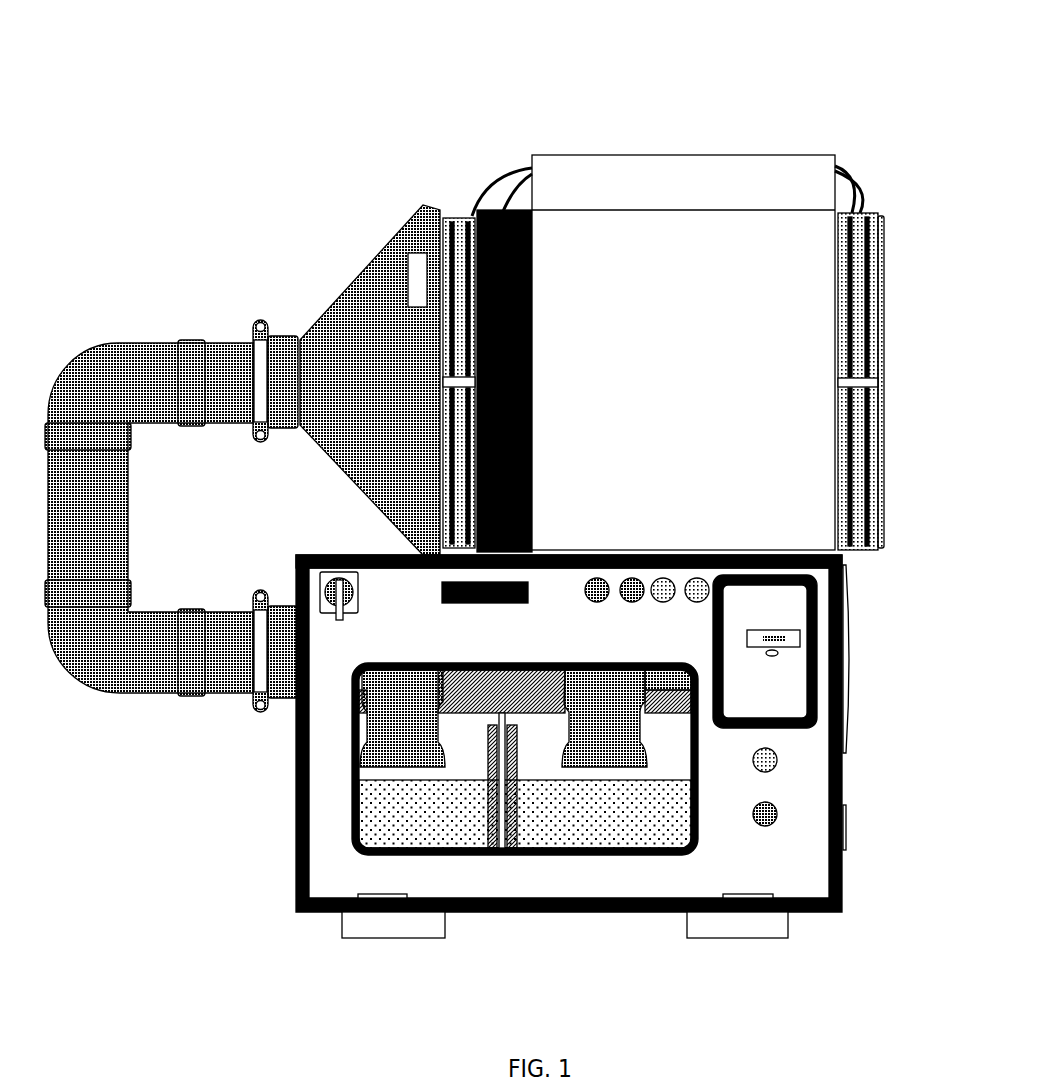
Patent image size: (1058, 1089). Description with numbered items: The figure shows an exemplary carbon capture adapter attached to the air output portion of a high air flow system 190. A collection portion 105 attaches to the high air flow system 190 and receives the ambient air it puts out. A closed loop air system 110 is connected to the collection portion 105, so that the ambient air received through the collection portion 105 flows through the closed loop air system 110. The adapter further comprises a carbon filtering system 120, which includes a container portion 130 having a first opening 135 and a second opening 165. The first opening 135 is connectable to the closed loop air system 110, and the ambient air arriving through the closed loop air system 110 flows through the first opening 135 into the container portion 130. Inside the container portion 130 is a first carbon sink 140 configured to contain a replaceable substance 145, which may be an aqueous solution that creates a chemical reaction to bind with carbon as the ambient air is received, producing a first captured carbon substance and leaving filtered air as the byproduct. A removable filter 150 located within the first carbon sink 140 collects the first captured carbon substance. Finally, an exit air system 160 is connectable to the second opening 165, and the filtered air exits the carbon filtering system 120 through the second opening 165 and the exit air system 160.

The collection portion 105 is at (357, 280).
The closed loop air system 110 is at (113, 347).
The carbon filtering system 120 is at (366, 575).
The container portion 130 is at (296, 848).
The first opening 135 is at (368, 755).
The first carbon sink 140 is at (528, 692).
The replaceable substance 145 is at (452, 833).
The removable filter 150 is at (510, 850).
The exit air system 160 is at (853, 622).
The second opening 165 is at (591, 686).
The high air flow system 190 is at (753, 152).